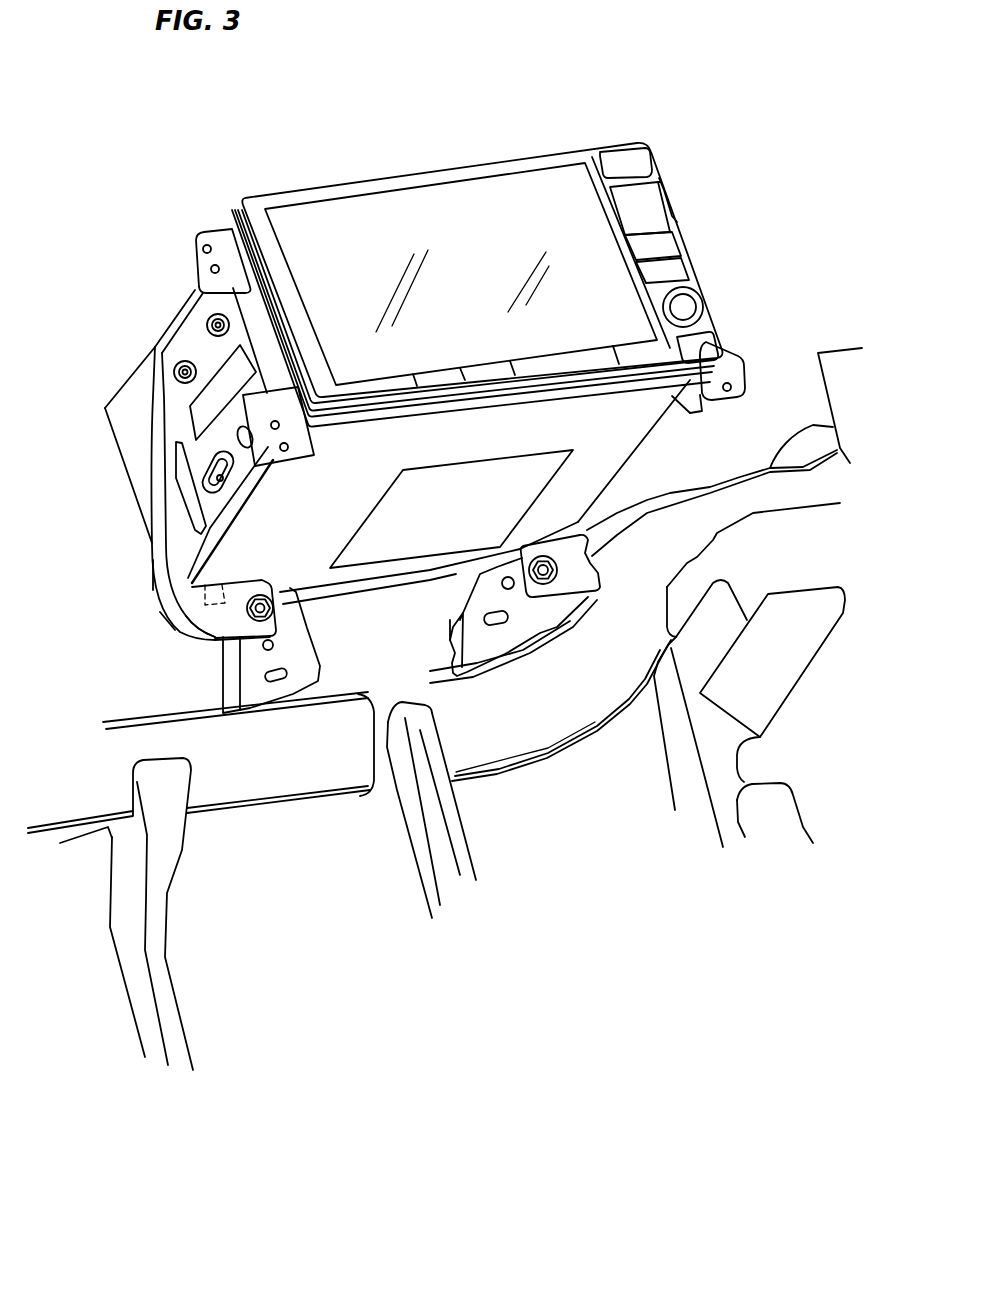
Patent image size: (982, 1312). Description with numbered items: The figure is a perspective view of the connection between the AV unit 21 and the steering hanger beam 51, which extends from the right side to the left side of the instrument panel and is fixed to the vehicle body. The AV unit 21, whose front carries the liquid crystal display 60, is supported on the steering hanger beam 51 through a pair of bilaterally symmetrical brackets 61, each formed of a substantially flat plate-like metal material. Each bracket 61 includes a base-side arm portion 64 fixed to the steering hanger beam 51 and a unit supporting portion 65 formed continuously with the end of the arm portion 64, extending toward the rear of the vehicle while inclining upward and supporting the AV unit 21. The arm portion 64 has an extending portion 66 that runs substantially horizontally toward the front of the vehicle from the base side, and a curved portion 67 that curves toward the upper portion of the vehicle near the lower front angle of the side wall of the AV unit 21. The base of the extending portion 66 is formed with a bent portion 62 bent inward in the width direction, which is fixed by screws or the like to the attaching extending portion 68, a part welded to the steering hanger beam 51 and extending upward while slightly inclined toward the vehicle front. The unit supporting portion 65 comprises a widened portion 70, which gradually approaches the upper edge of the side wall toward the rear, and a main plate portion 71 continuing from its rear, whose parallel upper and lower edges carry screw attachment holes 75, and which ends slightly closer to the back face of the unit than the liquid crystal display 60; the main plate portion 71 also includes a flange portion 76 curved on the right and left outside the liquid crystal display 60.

The AV unit 21 is at (477, 331).
The liquid crystal display 60 is at (442, 213).
The flange portion 76 is at (217, 237).
The bracket 61 is at (165, 459).
The widened portion 70 is at (158, 468).
The main plate portion 71 is at (193, 337).
The screw attachment hole 75 is at (212, 322).
The unit supporting portion 65 is at (218, 520).
The curved portion 67 is at (160, 585).
The arm portion 64 is at (162, 623).
The extending portion 66 is at (187, 628).
The bent portion 62 is at (262, 585).
The attaching extending portion 68 is at (233, 672).
The steering hanger beam 51 is at (583, 757).